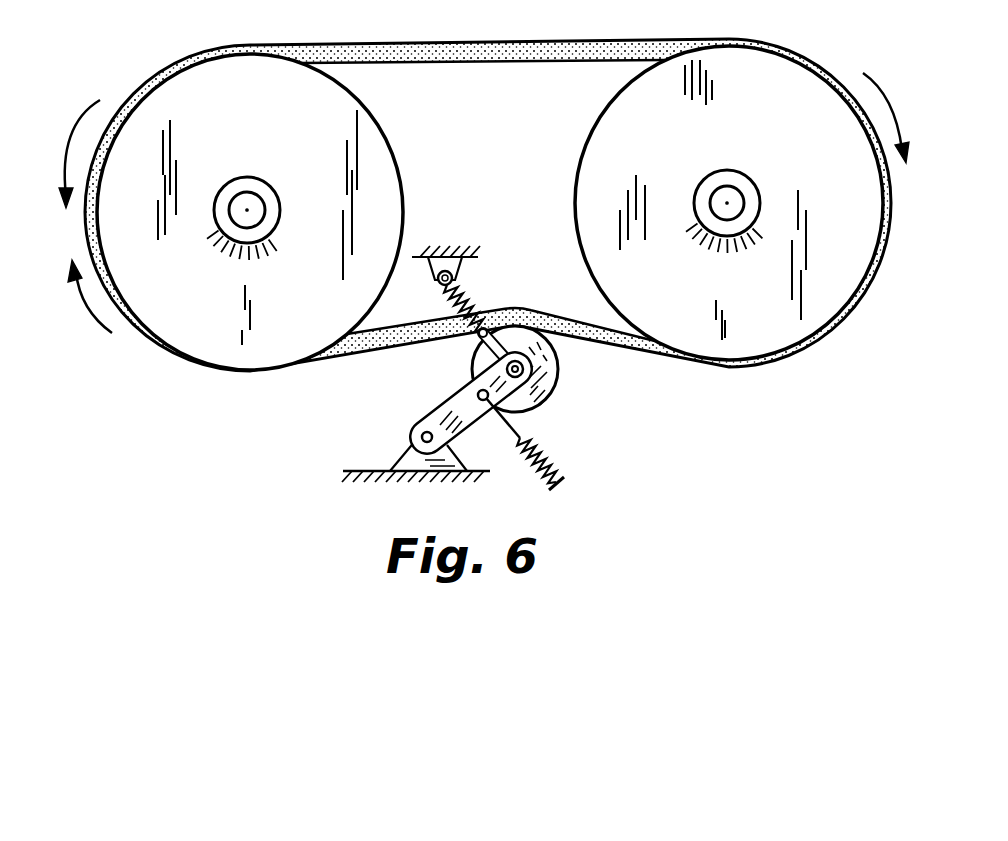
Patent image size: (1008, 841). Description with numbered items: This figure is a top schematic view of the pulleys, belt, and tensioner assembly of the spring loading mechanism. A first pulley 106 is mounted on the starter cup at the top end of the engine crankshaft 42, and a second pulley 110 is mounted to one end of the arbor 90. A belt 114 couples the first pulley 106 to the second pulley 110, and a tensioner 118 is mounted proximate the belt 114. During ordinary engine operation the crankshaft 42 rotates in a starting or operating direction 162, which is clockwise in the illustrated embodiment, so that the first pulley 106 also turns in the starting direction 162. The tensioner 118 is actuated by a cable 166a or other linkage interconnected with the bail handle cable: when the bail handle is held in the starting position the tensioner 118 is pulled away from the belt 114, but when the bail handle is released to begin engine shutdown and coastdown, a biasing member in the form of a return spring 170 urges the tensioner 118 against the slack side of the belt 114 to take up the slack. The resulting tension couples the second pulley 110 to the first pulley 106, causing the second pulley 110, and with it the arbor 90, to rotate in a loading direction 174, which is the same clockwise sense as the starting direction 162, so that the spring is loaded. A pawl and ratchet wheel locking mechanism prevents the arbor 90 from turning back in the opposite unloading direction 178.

The crankshaft 42 is at (728, 200).
The arbor 90 is at (250, 200).
The first pulley 106 is at (606, 111).
The second pulley 110 is at (362, 150).
The belt 114 is at (517, 52).
The tensioner 118 is at (562, 388).
The starting direction 162 is at (907, 60).
The cable 166a is at (548, 458).
The return spring 170 is at (477, 284).
The loading direction 174 is at (97, 317).
The unloading direction 178 is at (90, 120).